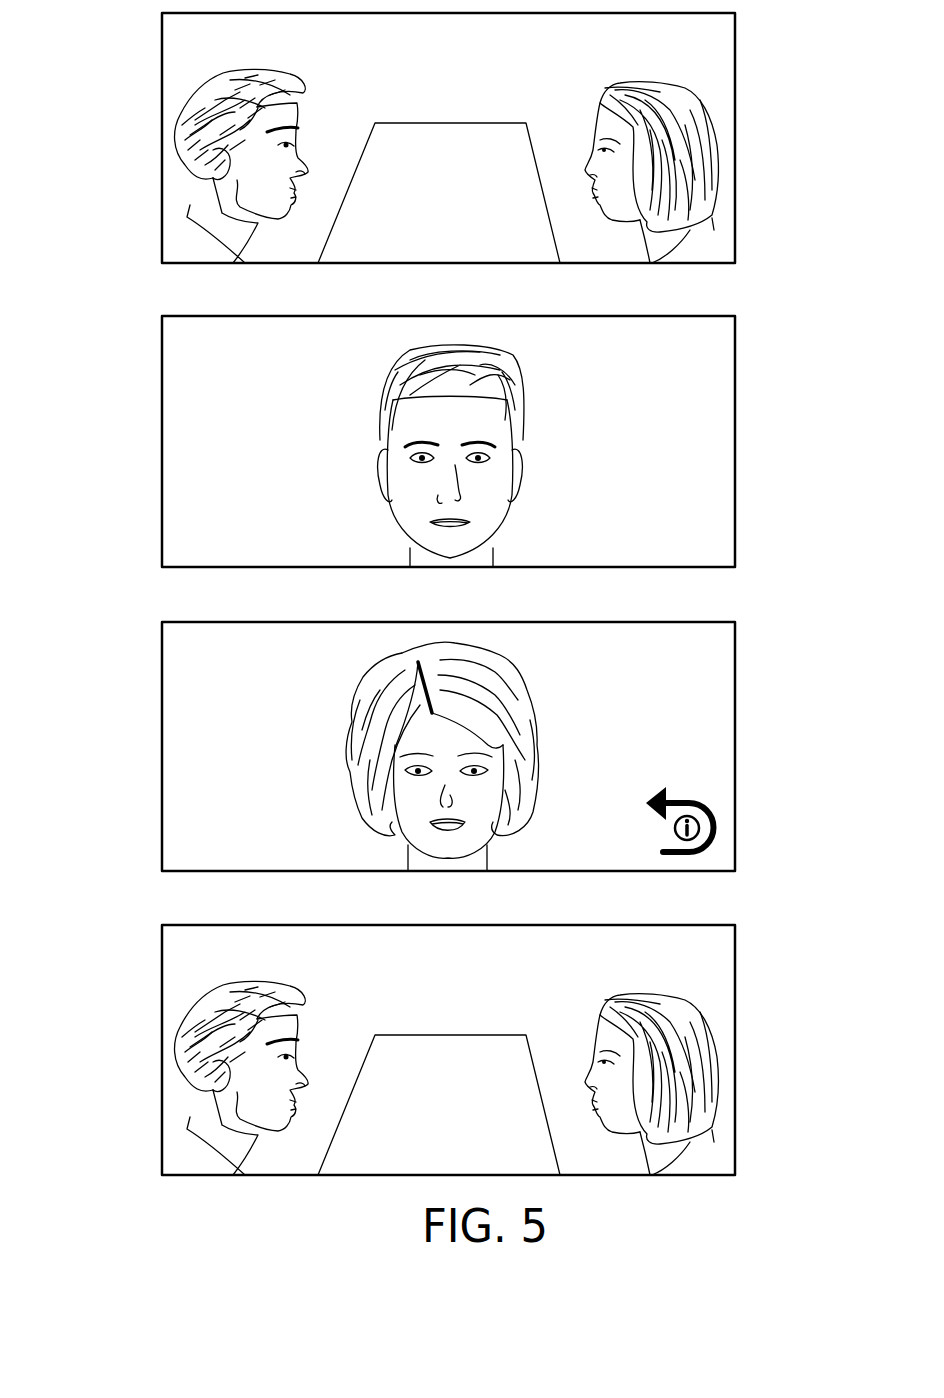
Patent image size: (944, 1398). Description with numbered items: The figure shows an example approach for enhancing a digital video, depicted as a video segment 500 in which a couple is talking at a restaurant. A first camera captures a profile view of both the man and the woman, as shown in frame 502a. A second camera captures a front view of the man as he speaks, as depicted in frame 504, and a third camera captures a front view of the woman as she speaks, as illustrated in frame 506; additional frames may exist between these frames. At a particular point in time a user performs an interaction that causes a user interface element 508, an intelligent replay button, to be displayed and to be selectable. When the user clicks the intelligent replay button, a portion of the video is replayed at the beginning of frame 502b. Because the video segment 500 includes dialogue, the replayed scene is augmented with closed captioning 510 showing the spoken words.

The video segment 500 is at (817, 150).
The frame 502a is at (162, 158).
The frame 504 is at (162, 462).
The frame 506 is at (162, 765).
The user interface element 508 is at (720, 818).
The frame 502b is at (162, 1068).
The closed captioning 510 is at (665, 1158).